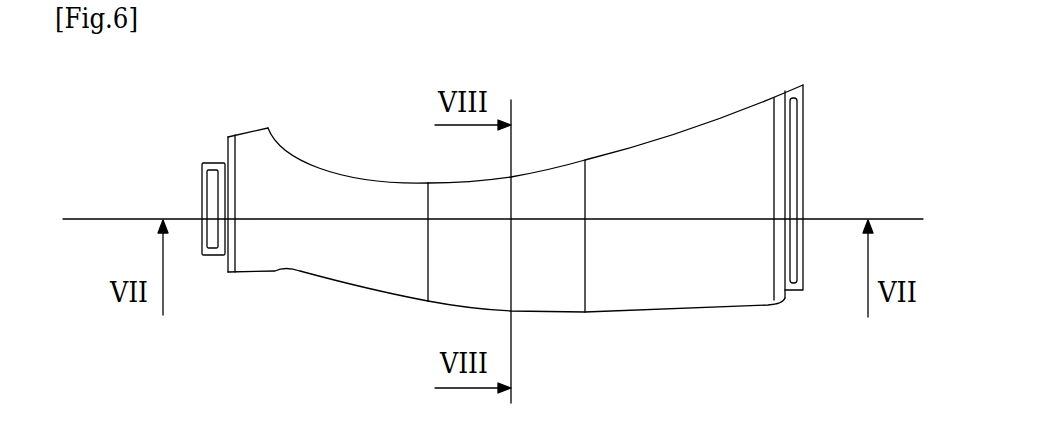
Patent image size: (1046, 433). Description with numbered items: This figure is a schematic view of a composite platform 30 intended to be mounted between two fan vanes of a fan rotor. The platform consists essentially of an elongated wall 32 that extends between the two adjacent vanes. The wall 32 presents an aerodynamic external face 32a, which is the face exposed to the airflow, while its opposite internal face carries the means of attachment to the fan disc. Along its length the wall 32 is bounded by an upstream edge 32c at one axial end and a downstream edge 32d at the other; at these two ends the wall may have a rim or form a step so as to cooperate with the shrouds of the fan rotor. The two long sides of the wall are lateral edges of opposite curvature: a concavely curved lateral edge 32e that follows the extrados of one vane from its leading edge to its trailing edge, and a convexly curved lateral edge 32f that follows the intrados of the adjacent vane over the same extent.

The composite platform 30 is at (859, 79).
The elongated wall 32 is at (678, 146).
The aerodynamic external face 32a is at (697, 290).
The upstream edge 32c is at (225, 207).
The downstream edge 32d is at (793, 168).
The concavely curved lateral edge 32e is at (575, 162).
The convexly curved lateral edge 32f is at (598, 313).